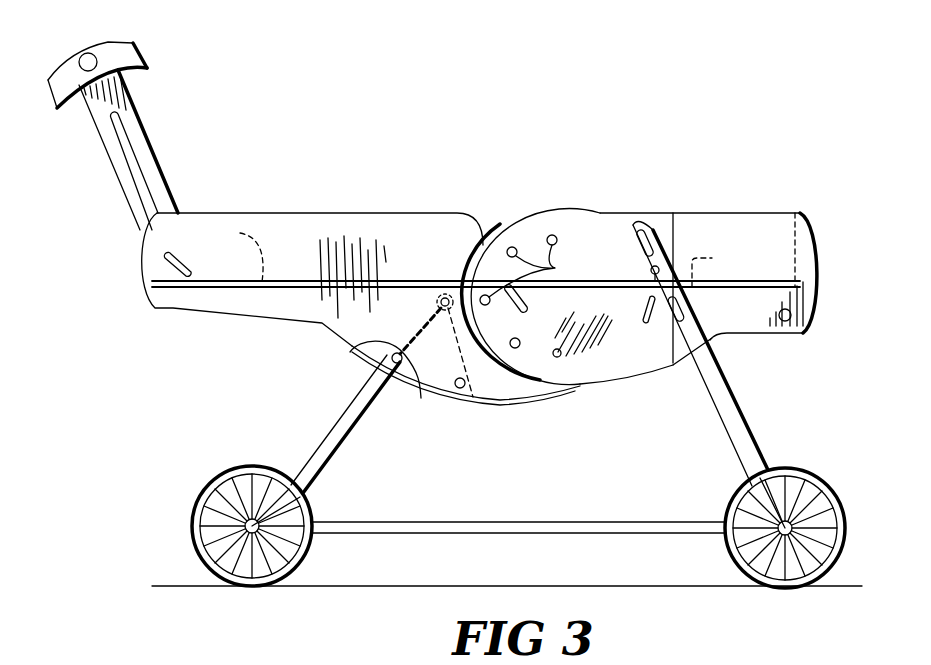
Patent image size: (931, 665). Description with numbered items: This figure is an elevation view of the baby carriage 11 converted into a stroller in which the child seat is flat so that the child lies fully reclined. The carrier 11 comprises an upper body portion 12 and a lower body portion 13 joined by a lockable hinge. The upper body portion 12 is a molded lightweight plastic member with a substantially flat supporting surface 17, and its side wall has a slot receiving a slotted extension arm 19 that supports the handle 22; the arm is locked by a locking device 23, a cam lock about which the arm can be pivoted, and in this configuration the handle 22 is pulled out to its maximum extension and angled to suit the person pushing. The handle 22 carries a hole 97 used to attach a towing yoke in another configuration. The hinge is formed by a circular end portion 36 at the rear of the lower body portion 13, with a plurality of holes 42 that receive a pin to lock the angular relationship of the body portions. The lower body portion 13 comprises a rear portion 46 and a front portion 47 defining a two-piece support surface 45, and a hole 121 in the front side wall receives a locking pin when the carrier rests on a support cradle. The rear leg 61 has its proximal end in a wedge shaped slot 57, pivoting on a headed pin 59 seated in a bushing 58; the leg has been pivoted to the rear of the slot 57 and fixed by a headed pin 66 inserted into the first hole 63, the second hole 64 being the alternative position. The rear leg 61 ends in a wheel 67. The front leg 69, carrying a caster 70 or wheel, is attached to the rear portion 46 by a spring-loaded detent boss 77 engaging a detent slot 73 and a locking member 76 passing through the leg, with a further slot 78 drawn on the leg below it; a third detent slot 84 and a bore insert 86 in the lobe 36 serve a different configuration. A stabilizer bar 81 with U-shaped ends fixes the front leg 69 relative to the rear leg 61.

The baby carriage 11 is at (316, 178).
The upper body portion 12 is at (297, 310).
The lower body portion 13 is at (720, 330).
The supporting surface 17 is at (239, 249).
The slotted extension arm 19 is at (118, 180).
The handle 22 is at (58, 72).
The locking device 23 is at (165, 268).
The circular end portion 36 is at (582, 375).
The holes 42 is at (536, 270).
The support surface 45 is at (722, 265).
The rear portion 46 is at (582, 212).
The front portion 47 is at (745, 215).
The wedge shaped slot 57 is at (433, 378).
The bushing 58 is at (438, 302).
The headed pin 59 is at (446, 296).
The first rear leg 61 is at (318, 430).
The first hole 63 is at (373, 343).
The second hole 64 is at (461, 389).
The headed pin 66 is at (400, 365).
The wheel 67 is at (193, 565).
The first front leg 69 is at (725, 415).
The caster 70 is at (852, 528).
The second detent slot 73 is at (641, 320).
The locking member 76 is at (651, 278).
The detent boss 77 is at (632, 232).
The lower slot 78 is at (672, 312).
The stabilizer bar 81 is at (525, 534).
The third detent slot 84 is at (512, 305).
The bore insert 86 is at (514, 350).
The hole 97 is at (136, 50).
The hole 121 is at (795, 325).